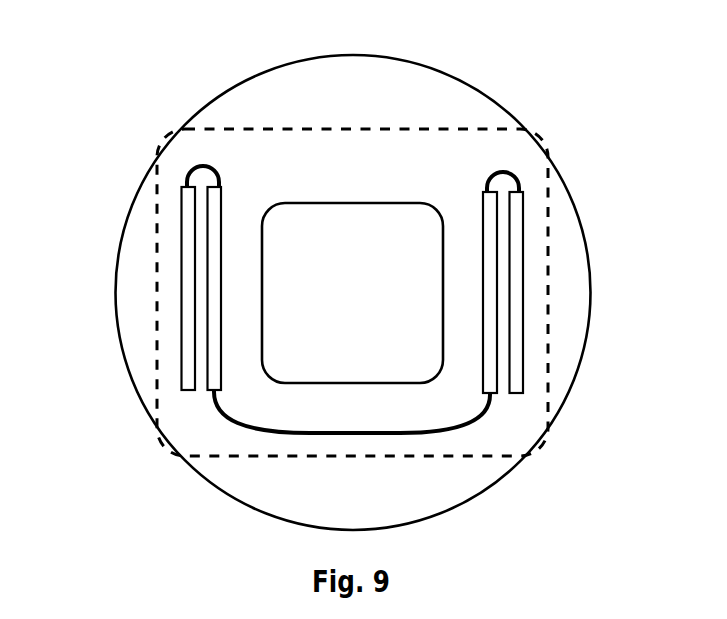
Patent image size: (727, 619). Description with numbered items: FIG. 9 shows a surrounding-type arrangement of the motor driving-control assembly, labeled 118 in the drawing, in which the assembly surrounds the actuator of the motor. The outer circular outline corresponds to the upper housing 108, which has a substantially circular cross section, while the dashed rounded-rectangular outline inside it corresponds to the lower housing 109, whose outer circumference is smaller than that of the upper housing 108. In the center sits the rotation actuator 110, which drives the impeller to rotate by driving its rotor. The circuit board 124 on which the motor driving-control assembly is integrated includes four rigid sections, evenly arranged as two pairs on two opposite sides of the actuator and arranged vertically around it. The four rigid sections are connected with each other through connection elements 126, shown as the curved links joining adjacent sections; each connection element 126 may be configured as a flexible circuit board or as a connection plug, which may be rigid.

The coil assembly 118 is at (70, 32).
The upper housing 108 is at (567, 402).
The lower housing 109 is at (548, 343).
The rotation actuator 110 is at (352, 293).
The circuit board 124 is at (183, 302).
The connection element 126 is at (202, 163).